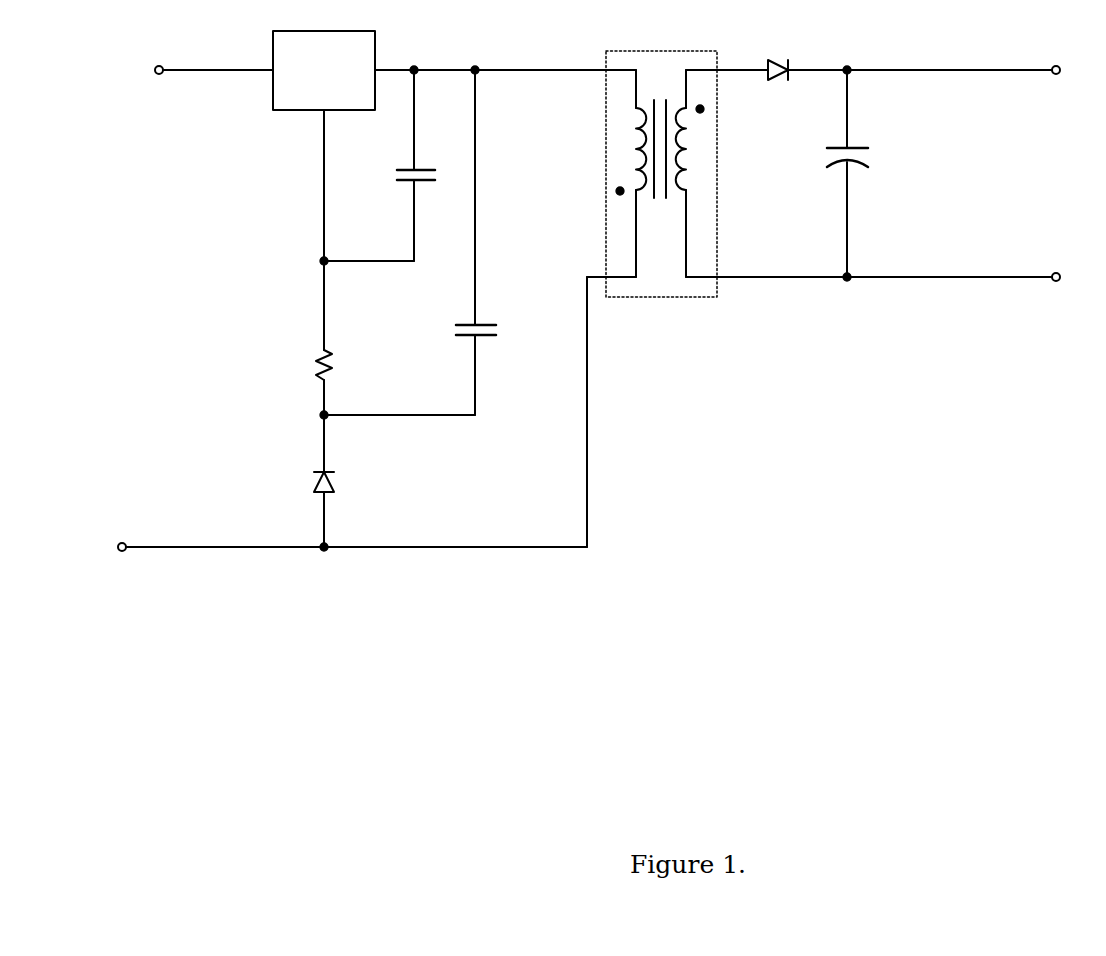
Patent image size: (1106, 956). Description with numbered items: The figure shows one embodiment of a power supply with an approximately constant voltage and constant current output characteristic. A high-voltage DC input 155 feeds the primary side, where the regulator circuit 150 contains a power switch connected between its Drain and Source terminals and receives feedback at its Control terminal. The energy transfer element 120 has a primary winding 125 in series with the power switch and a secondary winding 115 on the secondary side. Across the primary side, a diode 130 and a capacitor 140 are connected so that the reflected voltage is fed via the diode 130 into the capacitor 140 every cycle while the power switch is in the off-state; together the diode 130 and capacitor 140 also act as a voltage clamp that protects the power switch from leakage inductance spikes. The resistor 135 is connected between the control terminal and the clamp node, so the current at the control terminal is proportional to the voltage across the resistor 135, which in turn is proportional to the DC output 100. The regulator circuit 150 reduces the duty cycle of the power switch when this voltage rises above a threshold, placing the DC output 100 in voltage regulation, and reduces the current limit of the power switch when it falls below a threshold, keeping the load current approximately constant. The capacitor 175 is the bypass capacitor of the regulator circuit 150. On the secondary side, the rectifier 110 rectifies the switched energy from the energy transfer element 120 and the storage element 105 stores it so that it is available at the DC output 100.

The DC output 100 is at (1031, 99).
The storage element 105 is at (821, 165).
The rectifier 110 is at (779, 52).
The secondary winding 115 is at (700, 163).
The energy transfer element 120 is at (666, 199).
The primary winding 125 is at (621, 159).
The diode 130 is at (347, 485).
The resistor 135 is at (340, 365).
The capacitor 140 is at (498, 313).
The regulator circuit 150 is at (383, 56).
The HV DC input 155 is at (352, 308).
The capacitor 175 is at (397, 187).